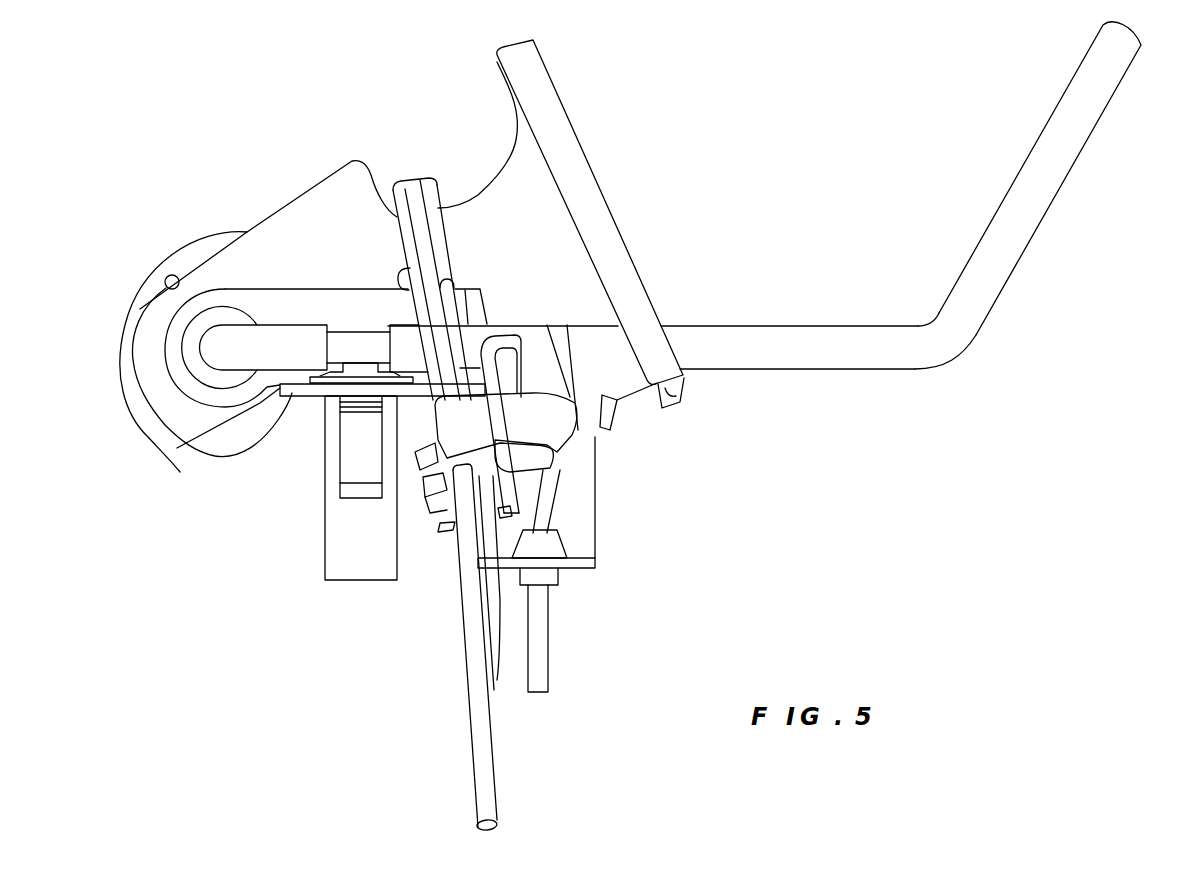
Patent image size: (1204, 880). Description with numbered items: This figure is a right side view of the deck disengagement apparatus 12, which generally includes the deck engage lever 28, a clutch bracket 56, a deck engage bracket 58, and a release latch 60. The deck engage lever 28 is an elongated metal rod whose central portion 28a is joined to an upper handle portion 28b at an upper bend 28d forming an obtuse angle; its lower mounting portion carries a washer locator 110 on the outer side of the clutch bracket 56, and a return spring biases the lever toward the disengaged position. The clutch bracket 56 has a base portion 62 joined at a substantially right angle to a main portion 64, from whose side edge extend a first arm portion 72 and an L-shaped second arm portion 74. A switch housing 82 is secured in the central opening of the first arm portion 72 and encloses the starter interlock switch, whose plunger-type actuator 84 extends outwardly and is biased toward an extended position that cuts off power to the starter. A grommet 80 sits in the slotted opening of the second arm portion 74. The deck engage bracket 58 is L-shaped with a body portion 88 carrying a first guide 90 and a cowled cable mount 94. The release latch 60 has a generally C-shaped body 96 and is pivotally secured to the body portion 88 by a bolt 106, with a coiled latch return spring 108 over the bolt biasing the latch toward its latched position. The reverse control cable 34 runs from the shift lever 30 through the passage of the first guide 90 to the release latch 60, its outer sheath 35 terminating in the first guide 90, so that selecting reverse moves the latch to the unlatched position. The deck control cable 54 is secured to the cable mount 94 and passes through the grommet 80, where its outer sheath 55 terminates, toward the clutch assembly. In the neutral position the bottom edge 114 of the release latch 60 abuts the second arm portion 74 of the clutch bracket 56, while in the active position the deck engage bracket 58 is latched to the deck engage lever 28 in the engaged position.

The deck disengagement apparatus 12 is at (753, 160).
The deck engage lever 28 is at (1053, 278).
The central portion 28a is at (789, 346).
The upper handle portion 28b is at (1047, 140).
The upper bend 28d is at (943, 350).
The shift lever 30 is at (197, 365).
The reverse control cable 34 is at (455, 340).
The outer sheath 35 is at (490, 777).
The deck control cable 54 is at (553, 498).
The outer sheath 55 is at (547, 668).
The clutch bracket 56 is at (600, 103).
The deck engage bracket 58 is at (580, 350).
The release latch 60 is at (465, 262).
The base portion 62 is at (595, 197).
The main portion 64 is at (342, 197).
The first arm portion 72 is at (228, 447).
The second arm portion 74 is at (580, 567).
The grommet 80 is at (550, 543).
The switch housing 82 is at (347, 553).
The actuator 84 is at (355, 370).
The body portion 88 is at (503, 442).
The first guide 90 is at (453, 440).
The cowled cable mount 94 is at (548, 327).
The C-shaped body 96 is at (413, 197).
The bolt 106 is at (437, 512).
The latch return spring 108 is at (505, 516).
The washer locator 110 is at (133, 383).
The bottom edge 114 is at (497, 680).